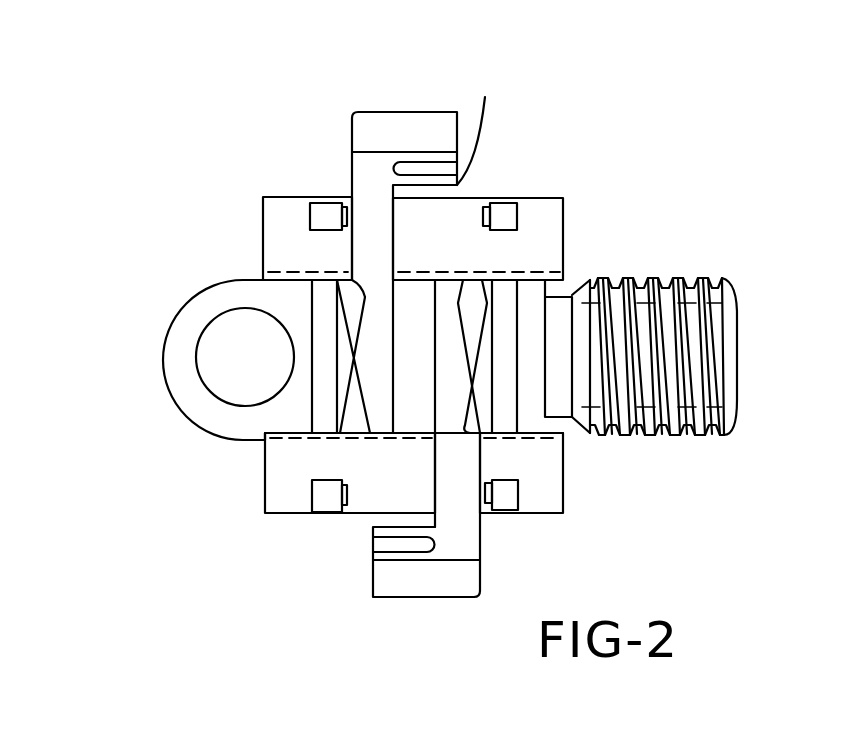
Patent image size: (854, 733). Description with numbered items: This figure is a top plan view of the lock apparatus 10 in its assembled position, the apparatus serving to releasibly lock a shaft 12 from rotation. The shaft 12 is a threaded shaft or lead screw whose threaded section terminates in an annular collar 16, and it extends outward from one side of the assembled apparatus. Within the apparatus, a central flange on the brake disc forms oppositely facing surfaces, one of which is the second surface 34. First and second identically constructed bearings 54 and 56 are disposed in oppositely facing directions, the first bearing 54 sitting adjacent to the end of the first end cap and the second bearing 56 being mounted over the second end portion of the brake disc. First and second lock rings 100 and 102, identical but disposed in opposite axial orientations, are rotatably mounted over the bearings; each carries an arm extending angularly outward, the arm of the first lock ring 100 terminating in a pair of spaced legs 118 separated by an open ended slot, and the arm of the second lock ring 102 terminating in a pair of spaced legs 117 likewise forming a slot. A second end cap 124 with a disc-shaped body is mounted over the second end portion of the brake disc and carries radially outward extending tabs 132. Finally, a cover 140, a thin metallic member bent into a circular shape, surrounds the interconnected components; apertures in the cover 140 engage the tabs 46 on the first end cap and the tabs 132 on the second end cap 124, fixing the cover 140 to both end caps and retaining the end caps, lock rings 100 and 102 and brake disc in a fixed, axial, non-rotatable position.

The lock apparatus 10 is at (481, 22).
The shaft 12 is at (701, 264).
The annular collar 16 is at (565, 438).
The second surface 34 is at (412, 290).
The tabs 46 is at (508, 205).
The first bearing 54 is at (488, 355).
The second bearing 56 is at (342, 342).
The first lock ring 100 is at (468, 518).
The second lock ring 102 is at (365, 176).
The spaced legs 117 is at (445, 123).
The spaced legs 118 is at (368, 535).
The second end cap 124 is at (205, 298).
The tabs 132 is at (318, 214).
The cover 140 is at (266, 162).